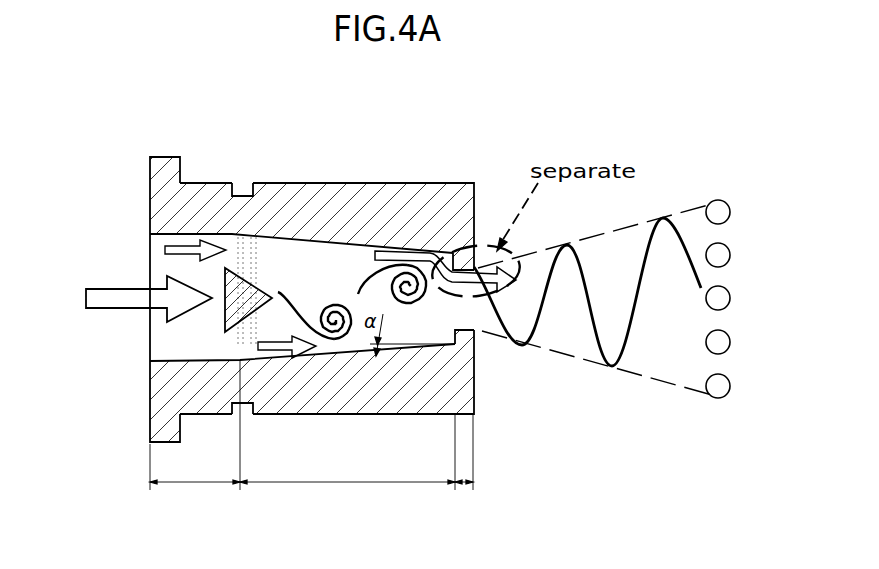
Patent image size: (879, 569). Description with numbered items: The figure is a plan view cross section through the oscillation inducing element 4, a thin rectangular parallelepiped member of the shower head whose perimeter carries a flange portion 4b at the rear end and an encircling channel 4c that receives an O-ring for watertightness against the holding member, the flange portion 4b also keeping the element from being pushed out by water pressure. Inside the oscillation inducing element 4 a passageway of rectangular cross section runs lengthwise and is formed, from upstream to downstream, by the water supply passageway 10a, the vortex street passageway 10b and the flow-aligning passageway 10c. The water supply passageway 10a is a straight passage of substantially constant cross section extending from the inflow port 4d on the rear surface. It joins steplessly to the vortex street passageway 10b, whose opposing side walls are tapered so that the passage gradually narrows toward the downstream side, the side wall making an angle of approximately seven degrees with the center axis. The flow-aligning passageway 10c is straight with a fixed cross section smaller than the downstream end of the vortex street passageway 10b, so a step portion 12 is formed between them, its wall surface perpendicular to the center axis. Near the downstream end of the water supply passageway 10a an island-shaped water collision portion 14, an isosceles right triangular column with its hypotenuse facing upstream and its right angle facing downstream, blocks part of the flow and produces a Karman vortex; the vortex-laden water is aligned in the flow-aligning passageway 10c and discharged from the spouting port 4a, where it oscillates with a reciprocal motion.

The oscillation inducing element 4 is at (492, 156).
The spouting port 4a is at (470, 323).
The flange portion 4b is at (165, 157).
The channel 4c is at (246, 183).
The inflow port 4d is at (150, 256).
The water supply passageway 10a is at (194, 484).
The vortex street passageway 10b is at (348, 484).
The flow-aligning passageway 10c is at (466, 484).
The step portion 12 is at (437, 252).
The water collision portion 14 is at (262, 296).